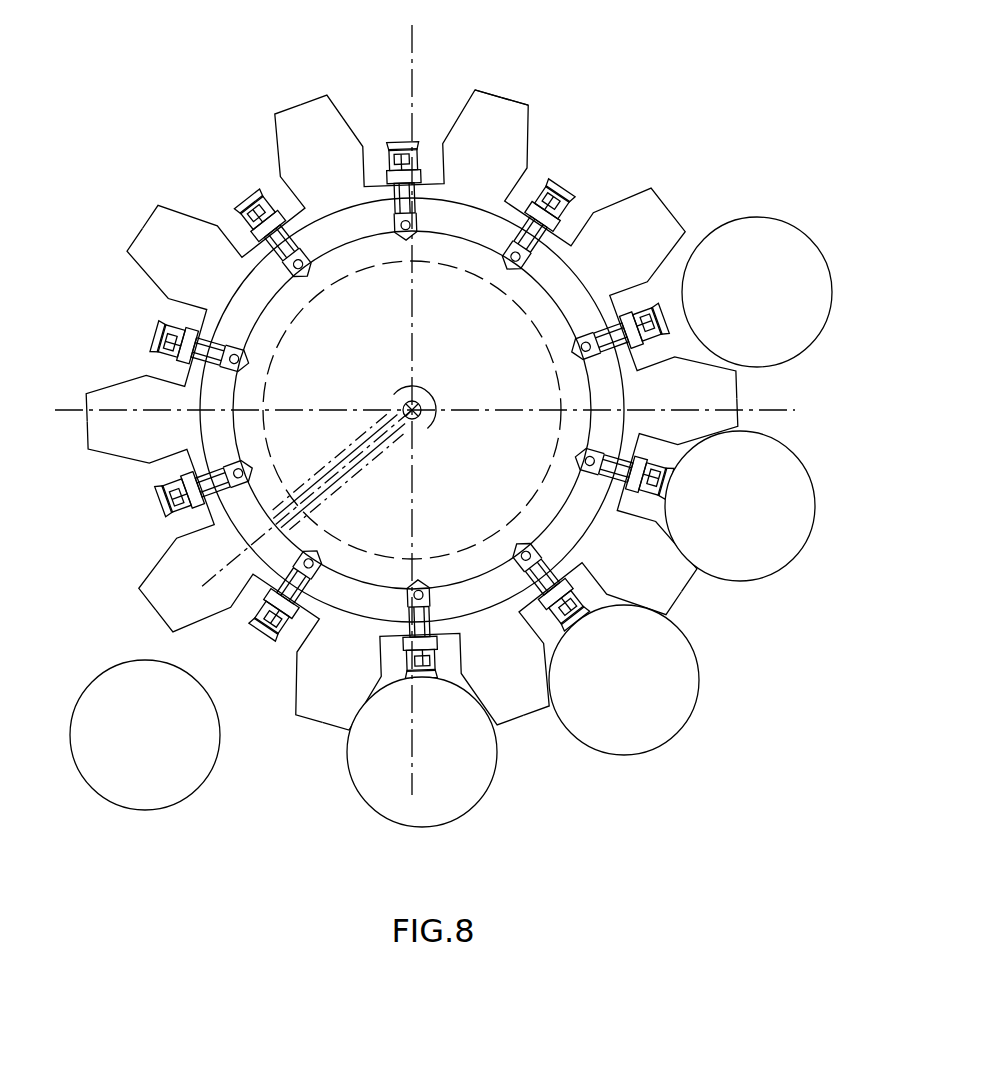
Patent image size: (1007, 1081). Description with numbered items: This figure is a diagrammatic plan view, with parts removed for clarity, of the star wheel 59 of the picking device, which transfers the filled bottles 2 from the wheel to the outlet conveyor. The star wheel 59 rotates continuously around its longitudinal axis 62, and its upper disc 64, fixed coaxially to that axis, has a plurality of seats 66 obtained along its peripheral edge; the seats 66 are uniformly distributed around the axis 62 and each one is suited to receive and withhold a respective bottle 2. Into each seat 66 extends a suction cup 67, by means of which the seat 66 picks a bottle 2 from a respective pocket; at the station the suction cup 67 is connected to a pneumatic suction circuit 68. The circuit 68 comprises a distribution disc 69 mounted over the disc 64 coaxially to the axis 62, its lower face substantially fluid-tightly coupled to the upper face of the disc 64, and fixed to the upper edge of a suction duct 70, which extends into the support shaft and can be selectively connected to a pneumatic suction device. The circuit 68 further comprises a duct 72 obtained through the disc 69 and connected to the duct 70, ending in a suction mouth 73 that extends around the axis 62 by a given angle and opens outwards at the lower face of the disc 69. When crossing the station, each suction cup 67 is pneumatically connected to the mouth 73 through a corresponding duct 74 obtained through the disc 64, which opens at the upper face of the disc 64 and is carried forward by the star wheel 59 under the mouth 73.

The star wheel 59 is at (677, 98).
The upper disc 64 is at (500, 105).
The seats 66 is at (272, 130).
The suction cup 67 is at (404, 147).
The duct 74 is at (220, 338).
The bottles 2 is at (757, 222).
The longitudinal axis 62 is at (399, 395).
The suction duct 70 is at (432, 398).
The duct 72 is at (372, 462).
The suction mouth 73 is at (291, 505).
The pneumatic suction circuit 68 is at (333, 628).
The distribution disc 69 is at (365, 607).